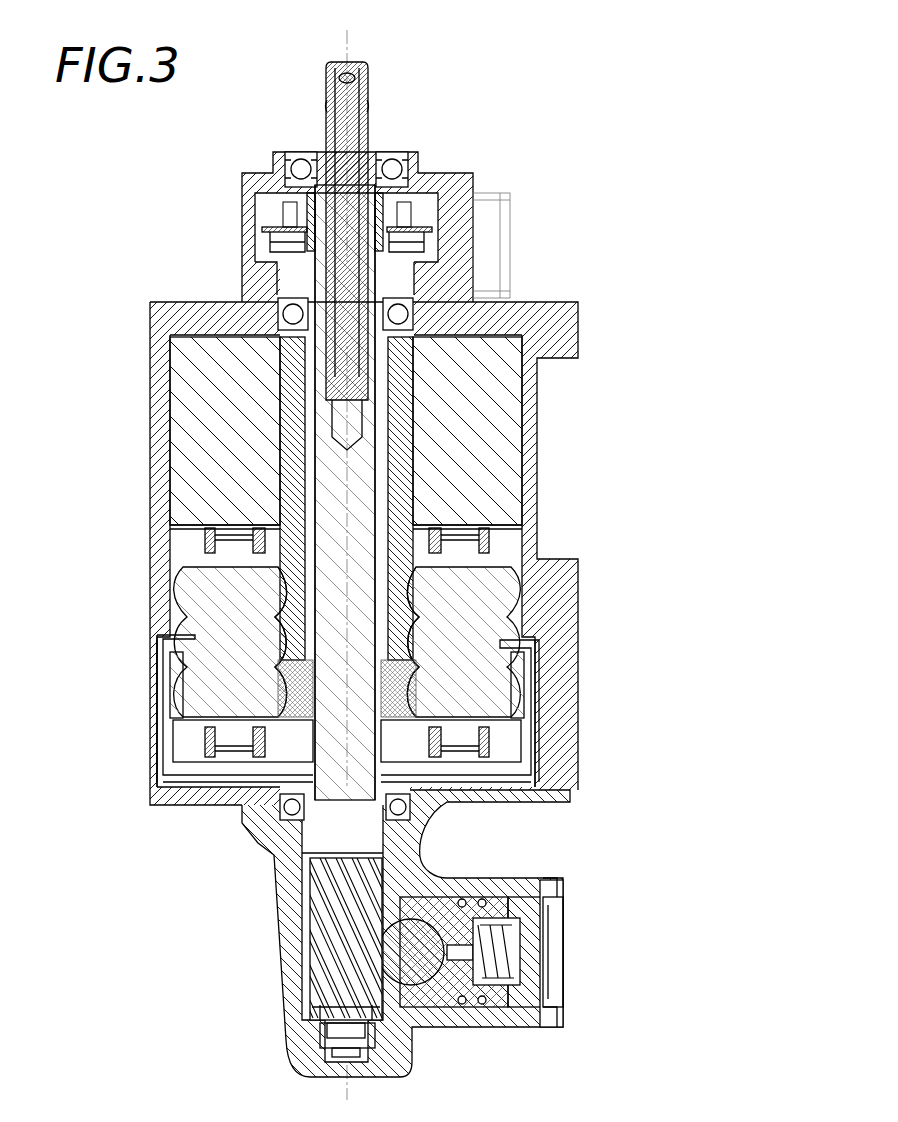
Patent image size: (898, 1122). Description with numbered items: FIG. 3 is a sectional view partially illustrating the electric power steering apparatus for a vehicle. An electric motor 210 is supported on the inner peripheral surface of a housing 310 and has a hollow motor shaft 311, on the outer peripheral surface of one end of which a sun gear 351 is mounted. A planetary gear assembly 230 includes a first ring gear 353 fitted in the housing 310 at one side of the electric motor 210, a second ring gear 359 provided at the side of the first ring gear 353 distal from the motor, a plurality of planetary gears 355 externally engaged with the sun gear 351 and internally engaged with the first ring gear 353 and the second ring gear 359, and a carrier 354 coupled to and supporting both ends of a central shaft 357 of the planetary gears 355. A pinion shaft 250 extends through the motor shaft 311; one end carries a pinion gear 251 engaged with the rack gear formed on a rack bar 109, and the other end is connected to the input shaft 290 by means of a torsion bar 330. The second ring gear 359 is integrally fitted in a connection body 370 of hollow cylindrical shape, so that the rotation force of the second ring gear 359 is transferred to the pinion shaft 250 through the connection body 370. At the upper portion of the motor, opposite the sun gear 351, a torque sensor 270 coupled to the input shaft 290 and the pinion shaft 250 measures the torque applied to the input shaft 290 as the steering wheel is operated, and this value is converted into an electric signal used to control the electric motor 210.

The rack bar 109 is at (413, 982).
The electric motor 210 is at (497, 428).
The planetary gear assembly 230 is at (66, 520).
The pinion shaft 250 is at (307, 853).
The pinion gear 251 is at (317, 963).
The torque sensor 270 is at (420, 213).
The input shaft 290 is at (368, 76).
The housing 310 is at (576, 336).
The motor shaft 311 is at (290, 377).
The torsion bar 330 is at (337, 113).
The sun gear 351 is at (287, 613).
The first ring gear 353 is at (180, 580).
The carrier 354 is at (202, 740).
The planetary gears 355 is at (185, 641).
The central shaft 357 is at (197, 550).
The second ring gear 359 is at (175, 700).
The connection body 370 is at (527, 765).